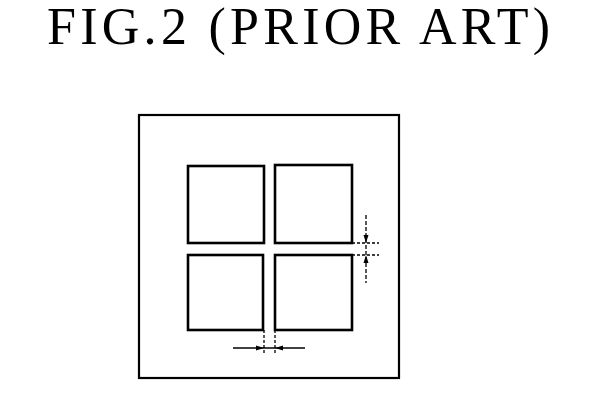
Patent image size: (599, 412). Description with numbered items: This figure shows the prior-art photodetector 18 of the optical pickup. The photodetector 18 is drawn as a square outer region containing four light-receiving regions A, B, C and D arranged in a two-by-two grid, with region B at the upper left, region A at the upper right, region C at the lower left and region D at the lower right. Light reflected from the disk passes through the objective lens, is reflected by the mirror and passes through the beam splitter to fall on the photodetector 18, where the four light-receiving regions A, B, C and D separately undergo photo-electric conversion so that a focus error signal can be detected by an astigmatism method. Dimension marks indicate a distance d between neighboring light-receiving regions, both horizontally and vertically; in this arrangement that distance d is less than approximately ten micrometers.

The photodetector 18 is at (382, 173).
The light-receiving region A is at (313, 204).
The light-receiving region B is at (226, 204).
The light-receiving region C is at (225, 292).
The light-receiving region D is at (313, 292).
The distance between light-receiving regions d is at (311, 297).